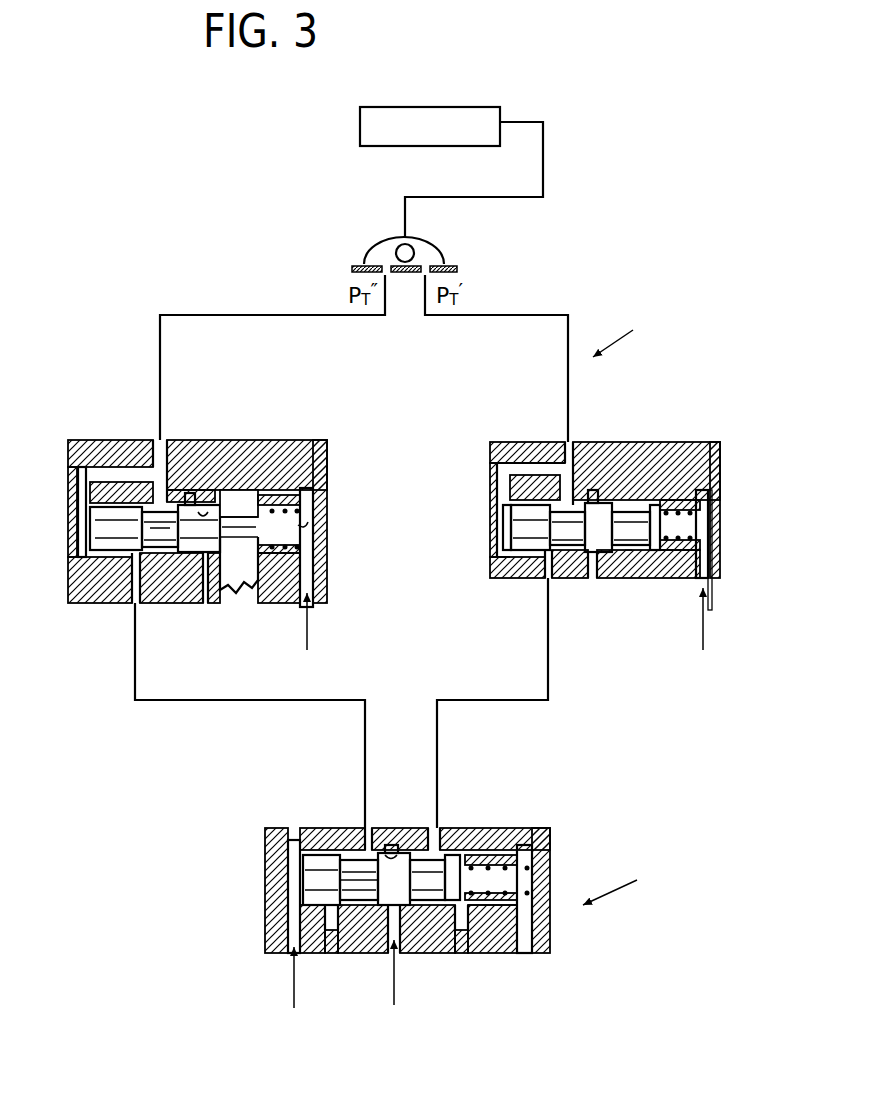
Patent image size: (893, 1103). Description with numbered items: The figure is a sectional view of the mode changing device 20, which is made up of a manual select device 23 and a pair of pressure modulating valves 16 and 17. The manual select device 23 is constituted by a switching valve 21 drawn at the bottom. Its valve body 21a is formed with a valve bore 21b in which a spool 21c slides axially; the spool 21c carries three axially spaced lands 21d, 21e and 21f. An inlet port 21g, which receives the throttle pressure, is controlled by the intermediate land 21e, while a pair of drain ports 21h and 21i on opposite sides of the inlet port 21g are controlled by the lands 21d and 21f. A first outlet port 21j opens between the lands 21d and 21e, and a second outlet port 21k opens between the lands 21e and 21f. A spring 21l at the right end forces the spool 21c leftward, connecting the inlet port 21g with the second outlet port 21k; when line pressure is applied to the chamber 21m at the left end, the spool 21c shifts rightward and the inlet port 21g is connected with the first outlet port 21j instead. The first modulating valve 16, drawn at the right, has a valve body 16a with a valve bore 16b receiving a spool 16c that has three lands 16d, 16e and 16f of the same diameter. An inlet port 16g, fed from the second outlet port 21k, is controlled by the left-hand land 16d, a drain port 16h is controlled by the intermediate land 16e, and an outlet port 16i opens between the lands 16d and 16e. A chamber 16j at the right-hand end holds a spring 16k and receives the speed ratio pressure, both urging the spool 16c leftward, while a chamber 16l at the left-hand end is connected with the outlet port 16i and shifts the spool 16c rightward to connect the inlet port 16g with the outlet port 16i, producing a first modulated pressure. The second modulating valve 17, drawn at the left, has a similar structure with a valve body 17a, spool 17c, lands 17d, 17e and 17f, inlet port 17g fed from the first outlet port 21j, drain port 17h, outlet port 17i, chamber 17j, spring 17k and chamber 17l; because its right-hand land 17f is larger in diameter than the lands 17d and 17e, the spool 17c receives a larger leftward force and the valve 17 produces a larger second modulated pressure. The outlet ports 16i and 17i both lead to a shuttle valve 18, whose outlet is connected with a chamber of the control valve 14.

The control valve 14 is at (477, 107).
The shuttle valve 18 is at (437, 250).
The mode changing device 20 is at (634, 335).
The manual select device 23 is at (627, 884).
The second modulating valve 17 is at (252, 410).
The valve body 17a is at (285, 468).
The spool 17c is at (160, 527).
The land 17d is at (113, 517).
The land 17e is at (203, 537).
The land 17f is at (262, 567).
The inlet port 17g is at (132, 582).
The drain port 17h is at (207, 520).
The outlet port 17i is at (170, 480).
The chamber 17j is at (323, 507).
The spring 17k is at (307, 547).
The chamber 17l is at (83, 487).
The first modulating valve 16 is at (619, 437).
The valve body 16a is at (658, 463).
The valve bore 16b is at (630, 543).
The spool 16c is at (560, 523).
The land 16d is at (520, 520).
The land 16e is at (588, 507).
The land 16f is at (673, 502).
The inlet port 16g is at (540, 567).
The drain port 16h is at (592, 562).
The outlet port 16i is at (568, 480).
The chamber 16j is at (692, 527).
The spring 16k is at (684, 553).
The chamber 16l is at (503, 505).
The switching valve 21 is at (418, 820).
The valve body 21a is at (510, 840).
The valve bore 21b is at (393, 862).
The spool 21c is at (345, 855).
The land 21d is at (315, 865).
The land 21e is at (393, 893).
The land 21f is at (490, 900).
The inlet port 21g is at (397, 930).
The drain port 21h is at (325, 925).
The drain port 21i is at (465, 915).
The first outlet port 21j is at (350, 880).
The second outlet port 21k is at (440, 850).
The spring 21l is at (510, 890).
The chamber 21m is at (292, 890).